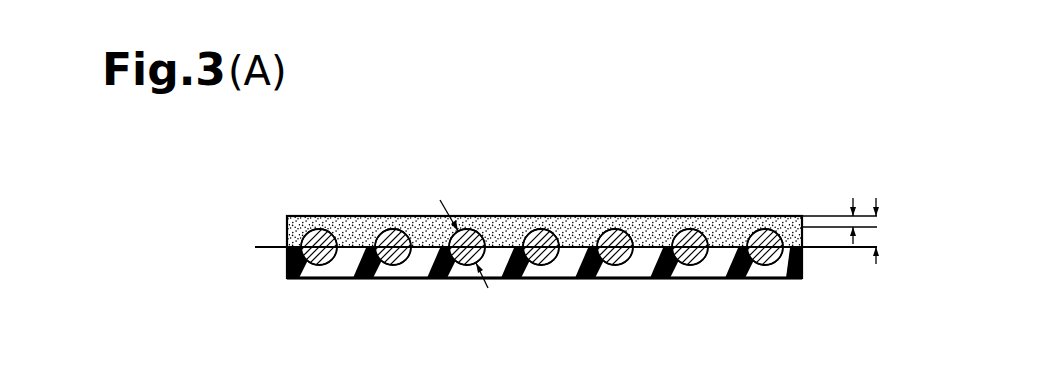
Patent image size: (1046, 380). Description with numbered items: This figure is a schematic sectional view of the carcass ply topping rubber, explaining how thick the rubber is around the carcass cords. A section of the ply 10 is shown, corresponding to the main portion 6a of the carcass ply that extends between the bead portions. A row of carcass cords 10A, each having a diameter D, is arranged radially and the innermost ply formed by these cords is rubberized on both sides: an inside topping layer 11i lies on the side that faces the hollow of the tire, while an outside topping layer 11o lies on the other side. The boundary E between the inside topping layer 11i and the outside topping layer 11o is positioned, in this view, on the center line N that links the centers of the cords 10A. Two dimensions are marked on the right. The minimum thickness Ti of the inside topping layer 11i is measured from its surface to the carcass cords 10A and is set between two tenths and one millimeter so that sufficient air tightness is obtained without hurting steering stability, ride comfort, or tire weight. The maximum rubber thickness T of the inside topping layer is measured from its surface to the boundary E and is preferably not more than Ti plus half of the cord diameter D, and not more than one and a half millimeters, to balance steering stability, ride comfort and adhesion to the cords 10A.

The reinforcing layer 10 is at (287, 222).
The cords 10A is at (392, 223).
The cord diameter D is at (462, 256).
The inside topping layer 11i is at (580, 222).
The outside topping layer 11o is at (580, 270).
The main portion 6a is at (692, 198).
The boundary E is at (732, 243).
The minimum thickness Ti is at (855, 218).
The maximum rubber thickness T is at (877, 230).
The center line N is at (270, 252).